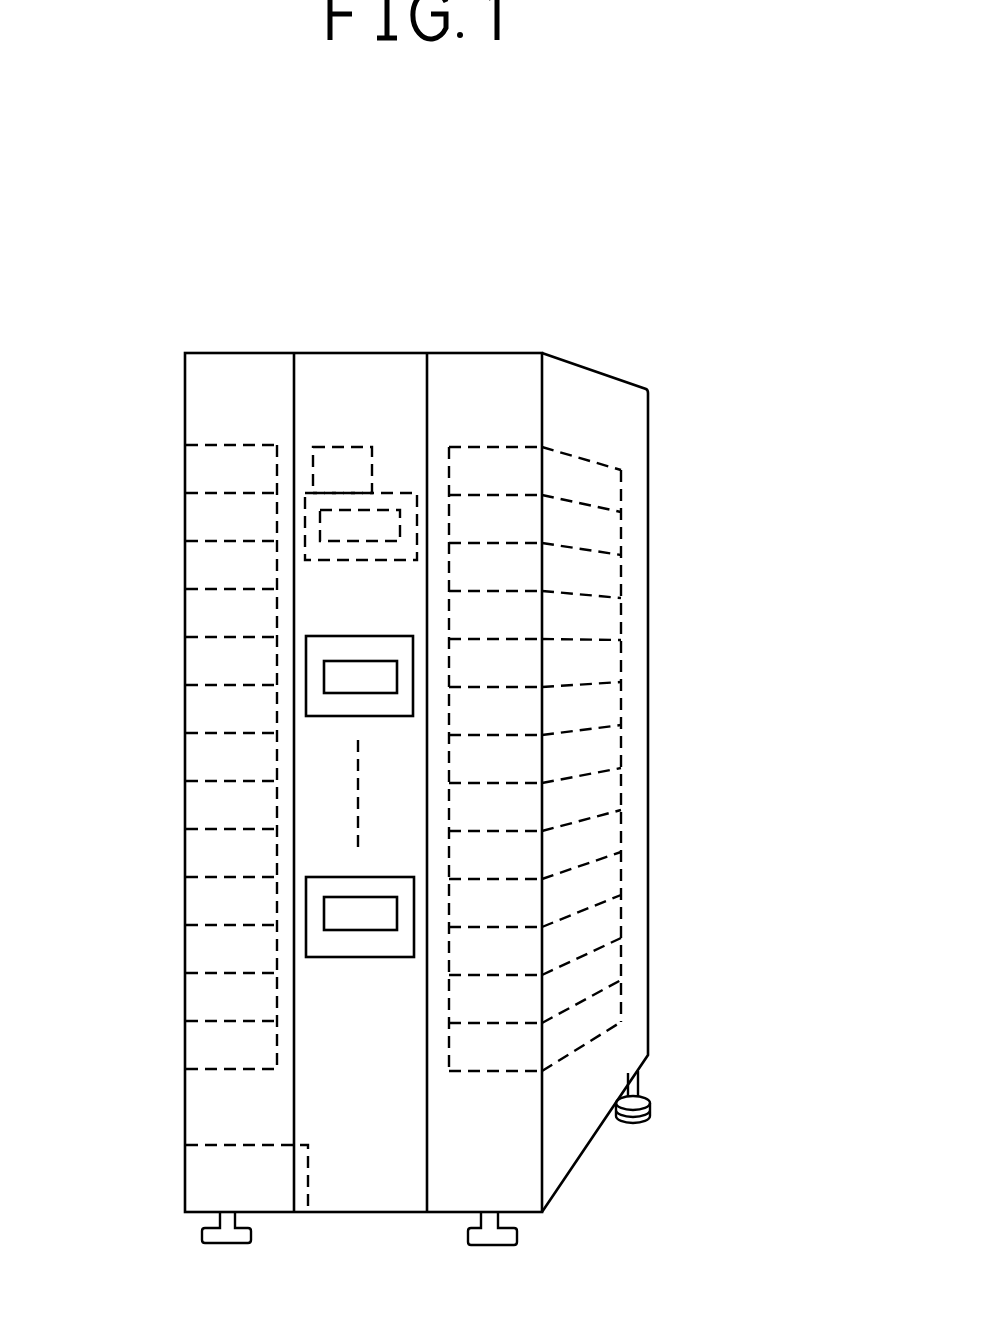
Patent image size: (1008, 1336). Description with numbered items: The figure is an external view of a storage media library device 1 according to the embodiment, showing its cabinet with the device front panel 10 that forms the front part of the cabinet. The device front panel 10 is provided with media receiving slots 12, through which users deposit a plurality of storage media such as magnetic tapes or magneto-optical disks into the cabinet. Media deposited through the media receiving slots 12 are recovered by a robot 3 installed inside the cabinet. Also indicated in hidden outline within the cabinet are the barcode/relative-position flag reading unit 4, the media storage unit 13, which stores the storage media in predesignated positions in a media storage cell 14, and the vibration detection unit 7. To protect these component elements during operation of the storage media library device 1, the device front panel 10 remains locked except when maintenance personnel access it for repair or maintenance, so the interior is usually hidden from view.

The storage media library device 1 is at (746, 343).
The device front panel 10 is at (240, 380).
The media storage cell 14 is at (200, 563).
The media storage unit 13 is at (182, 782).
The barcode/relative-position flag reading unit 4 is at (340, 450).
The robot 3 is at (401, 497).
The media receiving slots 12 is at (387, 708).
The vibration detection unit 7 is at (205, 1177).